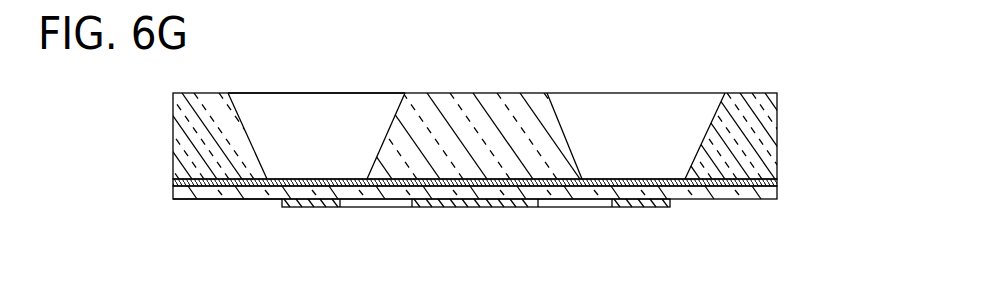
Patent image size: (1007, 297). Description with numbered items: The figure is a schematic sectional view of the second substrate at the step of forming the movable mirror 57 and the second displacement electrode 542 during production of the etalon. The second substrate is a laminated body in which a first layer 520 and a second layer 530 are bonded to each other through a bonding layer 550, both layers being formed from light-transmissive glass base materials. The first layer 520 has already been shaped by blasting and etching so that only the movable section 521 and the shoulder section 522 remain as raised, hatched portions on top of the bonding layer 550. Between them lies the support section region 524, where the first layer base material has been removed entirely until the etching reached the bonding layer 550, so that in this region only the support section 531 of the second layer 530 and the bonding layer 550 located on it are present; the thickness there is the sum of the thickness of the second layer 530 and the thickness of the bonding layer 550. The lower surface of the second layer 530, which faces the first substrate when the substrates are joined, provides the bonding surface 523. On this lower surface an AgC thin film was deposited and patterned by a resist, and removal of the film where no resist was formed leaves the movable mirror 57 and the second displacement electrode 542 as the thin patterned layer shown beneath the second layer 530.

The first layer 520 is at (770, 119).
The shoulder section 522 is at (772, 146).
The movable section 521 is at (490, 100).
The support section region 524 is at (315, 153).
The bonding layer 550 is at (772, 185).
The second layer 530 is at (770, 195).
The support section 531 is at (635, 193).
The bonding surface 523 is at (223, 203).
The movable mirror 57 is at (480, 207).
The second displacement electrode 542 is at (645, 207).